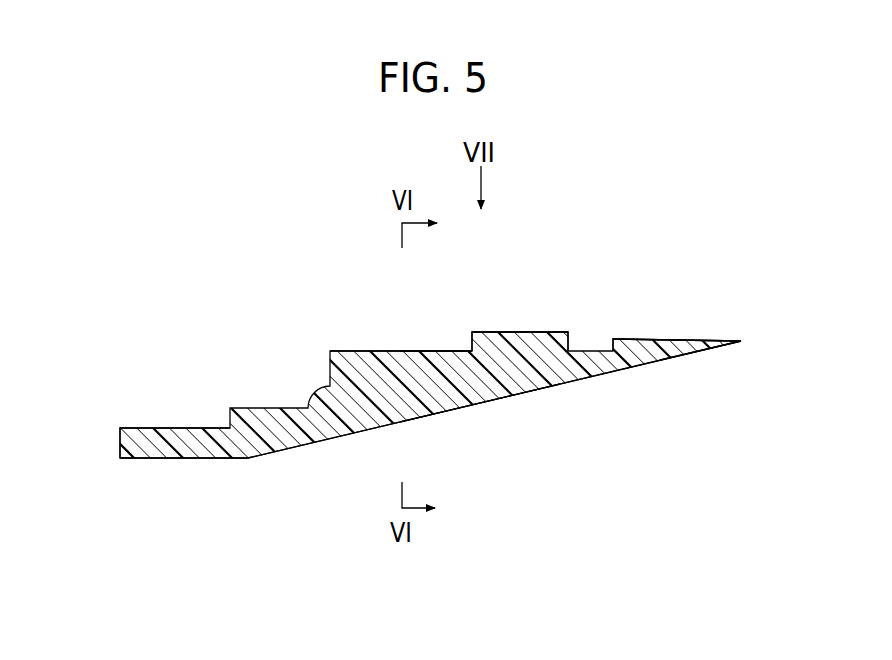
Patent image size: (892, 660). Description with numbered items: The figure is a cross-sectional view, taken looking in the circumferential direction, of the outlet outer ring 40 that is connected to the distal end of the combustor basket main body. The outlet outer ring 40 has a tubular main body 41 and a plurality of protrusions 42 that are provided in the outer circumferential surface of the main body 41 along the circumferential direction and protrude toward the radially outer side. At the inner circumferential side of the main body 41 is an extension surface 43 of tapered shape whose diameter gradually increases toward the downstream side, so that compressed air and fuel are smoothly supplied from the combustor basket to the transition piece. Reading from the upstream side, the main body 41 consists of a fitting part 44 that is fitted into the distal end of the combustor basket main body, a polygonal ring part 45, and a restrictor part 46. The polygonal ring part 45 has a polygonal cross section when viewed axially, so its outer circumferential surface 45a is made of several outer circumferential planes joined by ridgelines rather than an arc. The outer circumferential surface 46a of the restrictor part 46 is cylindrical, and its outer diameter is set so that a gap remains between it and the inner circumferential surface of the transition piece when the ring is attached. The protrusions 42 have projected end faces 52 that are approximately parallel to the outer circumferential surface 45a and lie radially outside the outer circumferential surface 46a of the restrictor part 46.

The outlet outer ring 40 is at (258, 338).
The main body 41 is at (394, 348).
The protrusions 42 is at (506, 332).
The extension surface 43 is at (345, 437).
The fitting part 44 is at (180, 445).
The polygonal ring part 45 is at (458, 362).
The outer circumferential surface 45a is at (433, 350).
The restrictor part 46 is at (647, 352).
The outer circumferential surface 46a is at (672, 339).
The projected end faces 52 is at (545, 332).